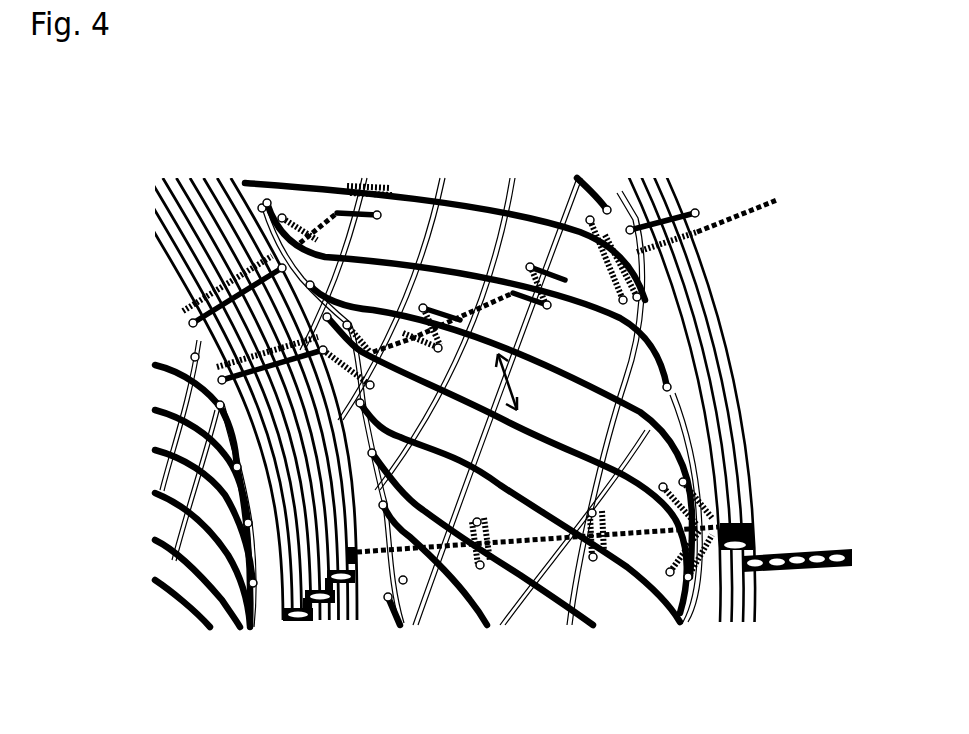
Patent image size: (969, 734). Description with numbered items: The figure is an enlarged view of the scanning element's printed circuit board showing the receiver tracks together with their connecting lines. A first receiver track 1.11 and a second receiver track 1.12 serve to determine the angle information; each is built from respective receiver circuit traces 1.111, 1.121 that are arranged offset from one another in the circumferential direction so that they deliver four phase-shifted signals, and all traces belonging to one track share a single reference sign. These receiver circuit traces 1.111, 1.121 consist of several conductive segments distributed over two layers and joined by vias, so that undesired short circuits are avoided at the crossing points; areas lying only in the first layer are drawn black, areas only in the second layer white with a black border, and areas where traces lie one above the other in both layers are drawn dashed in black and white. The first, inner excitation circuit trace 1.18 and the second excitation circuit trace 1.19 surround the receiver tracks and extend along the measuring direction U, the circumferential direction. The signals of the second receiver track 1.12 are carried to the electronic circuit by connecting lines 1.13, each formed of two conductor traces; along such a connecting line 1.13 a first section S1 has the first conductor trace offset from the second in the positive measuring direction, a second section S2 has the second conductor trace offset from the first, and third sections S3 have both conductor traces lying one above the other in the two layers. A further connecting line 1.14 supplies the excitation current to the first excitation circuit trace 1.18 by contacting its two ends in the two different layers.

The first receiver track 1.11 is at (649, 611).
The receiver circuit traces 1.111 is at (482, 200).
The second receiver track 1.12 is at (149, 518).
The receiver circuit traces 1.121 is at (158, 362).
The connecting line 1.13 is at (753, 215).
The further connecting line 1.14 is at (808, 572).
The first excitation circuit trace 1.18 is at (322, 607).
The second excitation circuit trace 1.19 is at (737, 442).
The first section S1 is at (441, 349).
The second section S2 is at (372, 300).
The third section S3 is at (447, 195).
The measuring direction U is at (512, 380).